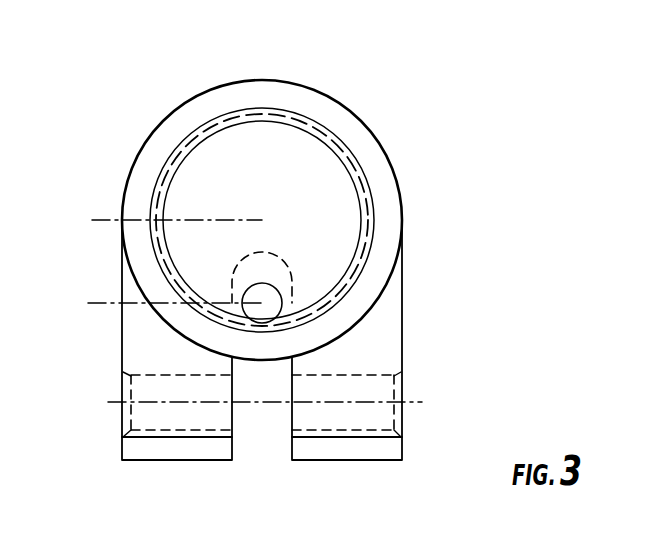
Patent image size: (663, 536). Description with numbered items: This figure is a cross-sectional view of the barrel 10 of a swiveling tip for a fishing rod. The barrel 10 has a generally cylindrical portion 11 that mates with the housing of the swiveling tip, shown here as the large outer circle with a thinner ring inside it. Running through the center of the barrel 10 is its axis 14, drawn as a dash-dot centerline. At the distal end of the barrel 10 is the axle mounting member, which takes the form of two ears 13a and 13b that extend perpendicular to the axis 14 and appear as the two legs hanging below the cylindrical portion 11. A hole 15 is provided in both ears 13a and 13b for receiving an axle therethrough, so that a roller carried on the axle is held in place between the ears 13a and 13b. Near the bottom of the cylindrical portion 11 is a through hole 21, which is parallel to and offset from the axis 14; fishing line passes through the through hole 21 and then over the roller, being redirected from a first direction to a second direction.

The barrel 10 is at (258, 80).
The cylindrical portion 11 is at (195, 133).
The axis 14 is at (102, 220).
The through hole 21 is at (262, 305).
The hole 15 is at (412, 401).
The ear 13a is at (130, 460).
The ear 13b is at (403, 453).